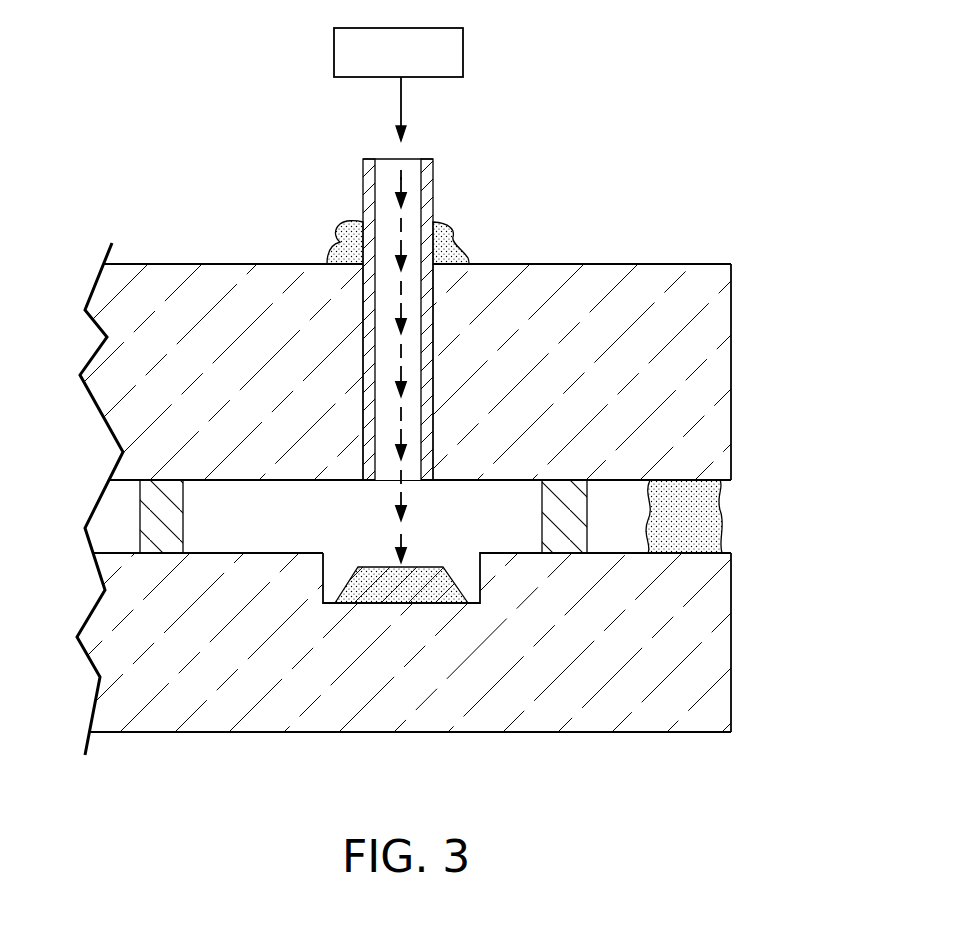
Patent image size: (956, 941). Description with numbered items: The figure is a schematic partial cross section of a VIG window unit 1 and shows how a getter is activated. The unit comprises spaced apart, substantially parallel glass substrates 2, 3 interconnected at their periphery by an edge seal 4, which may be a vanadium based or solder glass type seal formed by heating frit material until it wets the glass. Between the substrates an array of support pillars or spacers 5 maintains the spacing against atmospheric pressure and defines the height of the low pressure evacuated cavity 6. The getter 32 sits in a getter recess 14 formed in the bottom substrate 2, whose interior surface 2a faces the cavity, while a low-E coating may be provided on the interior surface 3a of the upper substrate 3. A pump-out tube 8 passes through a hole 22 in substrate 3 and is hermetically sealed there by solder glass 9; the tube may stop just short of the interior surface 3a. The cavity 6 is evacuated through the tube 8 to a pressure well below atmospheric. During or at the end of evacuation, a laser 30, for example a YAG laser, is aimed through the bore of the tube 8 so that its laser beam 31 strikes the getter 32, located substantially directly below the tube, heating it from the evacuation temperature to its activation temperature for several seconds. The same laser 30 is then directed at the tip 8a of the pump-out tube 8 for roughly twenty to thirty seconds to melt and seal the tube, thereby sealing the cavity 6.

The VIG window unit 1 is at (455, 391).
The glass substrate 2 is at (450, 615).
The upper surface of second substrate 2a is at (238, 553).
The glass substrate 3 is at (455, 339).
The interior surface of glass substrate 3 3a is at (288, 479).
The edge seal 4 is at (695, 513).
The support pillars/spacers 5 is at (157, 523).
The low pressure evacuated cavity 6 is at (243, 510).
The pump-out tube 8 is at (432, 296).
The tip of pump-out tube 8a is at (427, 159).
The solder glass 9 is at (343, 245).
The getter recess 14 is at (342, 561).
The hole 22 is at (434, 370).
The laser 30 is at (334, 52).
The laser beam 31 is at (397, 182).
The getter 32 is at (430, 583).